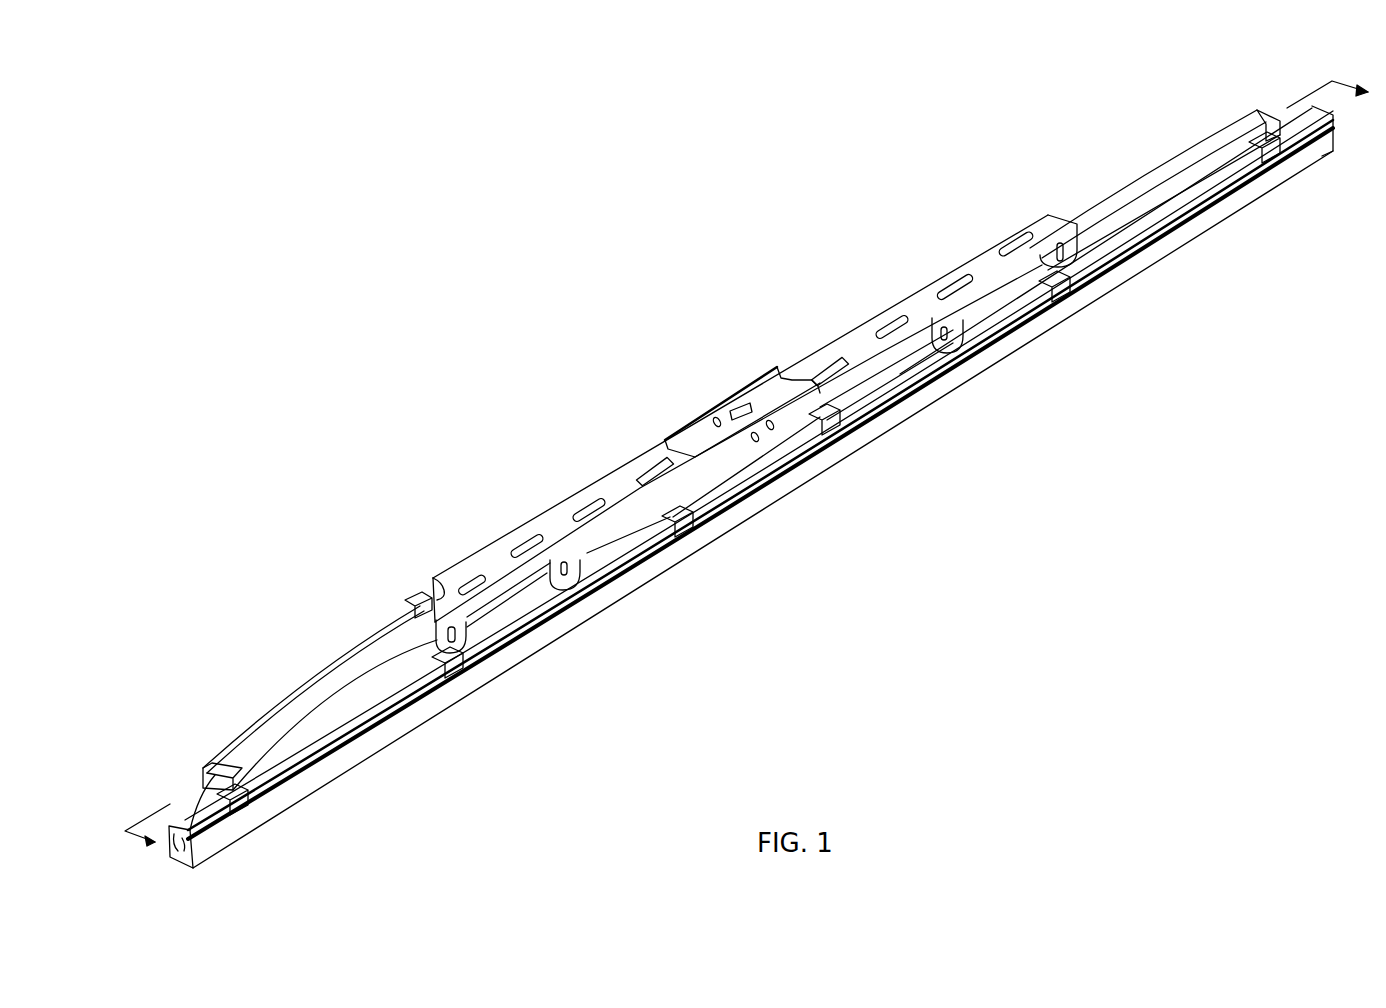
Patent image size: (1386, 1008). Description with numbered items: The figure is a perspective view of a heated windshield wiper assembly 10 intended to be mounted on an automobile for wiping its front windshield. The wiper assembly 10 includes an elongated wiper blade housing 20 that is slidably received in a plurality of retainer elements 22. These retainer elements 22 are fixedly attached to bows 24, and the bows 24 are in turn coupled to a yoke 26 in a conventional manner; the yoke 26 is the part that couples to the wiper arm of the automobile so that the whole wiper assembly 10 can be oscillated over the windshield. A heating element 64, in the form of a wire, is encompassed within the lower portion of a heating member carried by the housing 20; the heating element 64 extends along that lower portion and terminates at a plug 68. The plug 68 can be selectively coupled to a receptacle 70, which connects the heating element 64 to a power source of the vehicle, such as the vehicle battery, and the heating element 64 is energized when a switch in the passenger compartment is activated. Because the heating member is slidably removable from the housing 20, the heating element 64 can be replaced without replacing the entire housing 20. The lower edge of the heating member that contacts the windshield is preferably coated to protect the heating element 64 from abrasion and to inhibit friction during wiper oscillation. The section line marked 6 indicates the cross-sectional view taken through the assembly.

The windshield wiper assembly 10 is at (158, 857).
The wiper blade housing 20 is at (737, 472).
The retainer elements 22 is at (242, 806).
The bows 24 is at (284, 698).
The yoke 26 is at (607, 483).
The heating element 64 is at (188, 800).
The plug 68 is at (415, 602).
The receptacle 70 is at (432, 580).
The section line 6- 6 is at (741, 450).